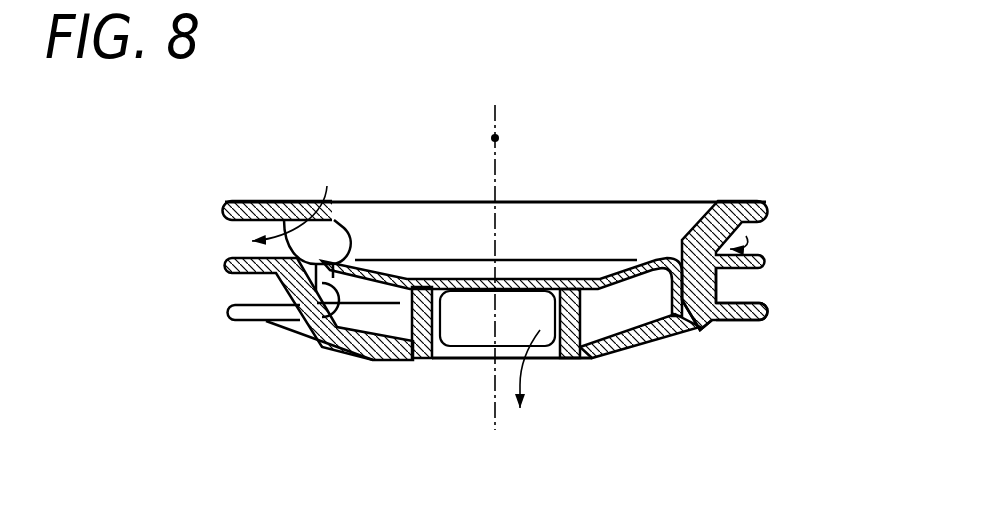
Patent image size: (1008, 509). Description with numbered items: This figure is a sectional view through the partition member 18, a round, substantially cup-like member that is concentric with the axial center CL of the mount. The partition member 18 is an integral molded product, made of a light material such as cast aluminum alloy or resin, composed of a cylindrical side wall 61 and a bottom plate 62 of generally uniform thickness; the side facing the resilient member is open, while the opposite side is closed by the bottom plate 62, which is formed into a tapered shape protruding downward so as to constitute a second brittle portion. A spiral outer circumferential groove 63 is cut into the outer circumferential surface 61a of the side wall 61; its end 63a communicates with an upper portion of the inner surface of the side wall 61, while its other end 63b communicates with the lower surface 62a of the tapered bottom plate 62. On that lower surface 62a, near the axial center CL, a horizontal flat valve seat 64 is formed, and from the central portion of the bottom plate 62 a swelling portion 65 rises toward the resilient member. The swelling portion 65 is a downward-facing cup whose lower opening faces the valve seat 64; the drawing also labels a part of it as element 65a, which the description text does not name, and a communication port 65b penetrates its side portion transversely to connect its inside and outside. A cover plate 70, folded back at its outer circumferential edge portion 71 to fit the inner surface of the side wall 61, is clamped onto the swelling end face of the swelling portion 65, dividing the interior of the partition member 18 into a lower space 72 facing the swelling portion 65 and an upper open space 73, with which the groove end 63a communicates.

The partition member 18 is at (788, 199).
The side wall 61 is at (726, 282).
The outer circumferential surface 61a is at (768, 309).
The bottom plate 62 is at (708, 328).
The lower surface 62a is at (657, 345).
The outer circumferential groove 63 is at (283, 293).
The end of outer circumferential groove 63a is at (342, 230).
The other end of outer circumferential groove 63b is at (266, 318).
The valve seat 64 is at (582, 352).
The swelling portion 65 is at (404, 329).
The inner liner 65a is at (470, 340).
The communication port 65b is at (490, 346).
The cover plate 70 is at (400, 248).
The outer circumferential edge portion 71 is at (313, 330).
The lower space 72 is at (639, 284).
The open space 73 is at (582, 233).
The axial center CL is at (495, 138).